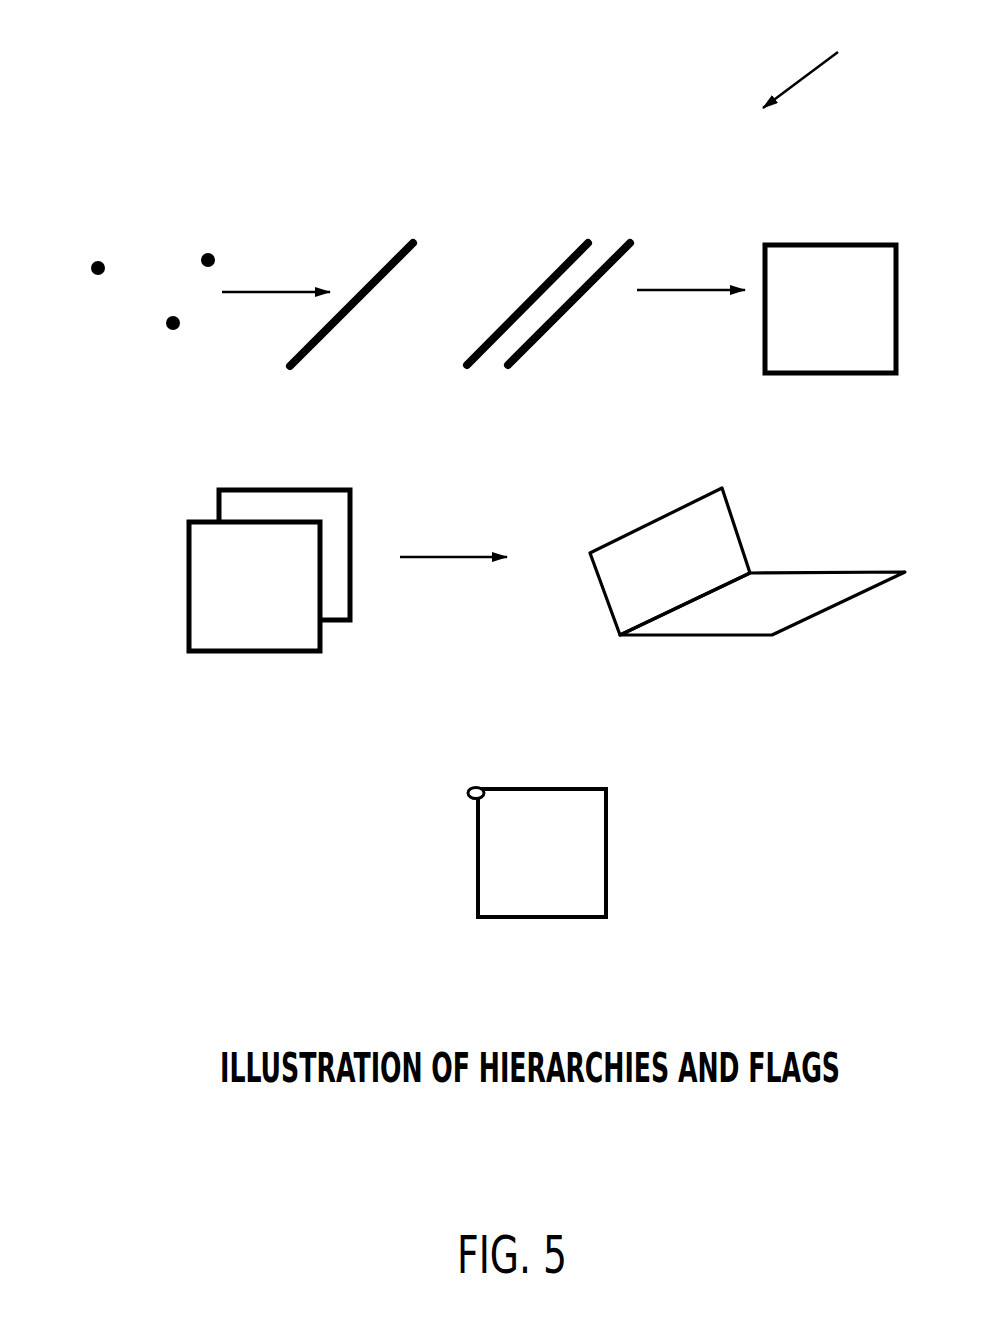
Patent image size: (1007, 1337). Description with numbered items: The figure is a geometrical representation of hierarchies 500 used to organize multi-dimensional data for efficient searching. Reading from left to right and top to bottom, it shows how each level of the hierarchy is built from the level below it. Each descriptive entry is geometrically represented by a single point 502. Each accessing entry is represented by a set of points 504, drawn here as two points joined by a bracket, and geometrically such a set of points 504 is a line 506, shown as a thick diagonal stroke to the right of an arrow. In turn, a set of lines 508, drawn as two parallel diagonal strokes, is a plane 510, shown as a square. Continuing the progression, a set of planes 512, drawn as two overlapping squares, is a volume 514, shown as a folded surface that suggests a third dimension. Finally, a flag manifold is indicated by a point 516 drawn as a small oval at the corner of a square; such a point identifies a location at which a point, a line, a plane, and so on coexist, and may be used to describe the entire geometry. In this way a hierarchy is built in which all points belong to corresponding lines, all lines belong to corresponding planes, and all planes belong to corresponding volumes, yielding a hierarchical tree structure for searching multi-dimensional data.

The illustration of hierarchies and flags 500 is at (822, 70).
The point 502 is at (90, 255).
The set of points 504 is at (175, 285).
The line 506 is at (382, 270).
The set of lines 508 is at (548, 269).
The plane 510 is at (822, 242).
The set of planes 512 is at (223, 559).
The volume 514 is at (782, 570).
The point 516 is at (468, 797).